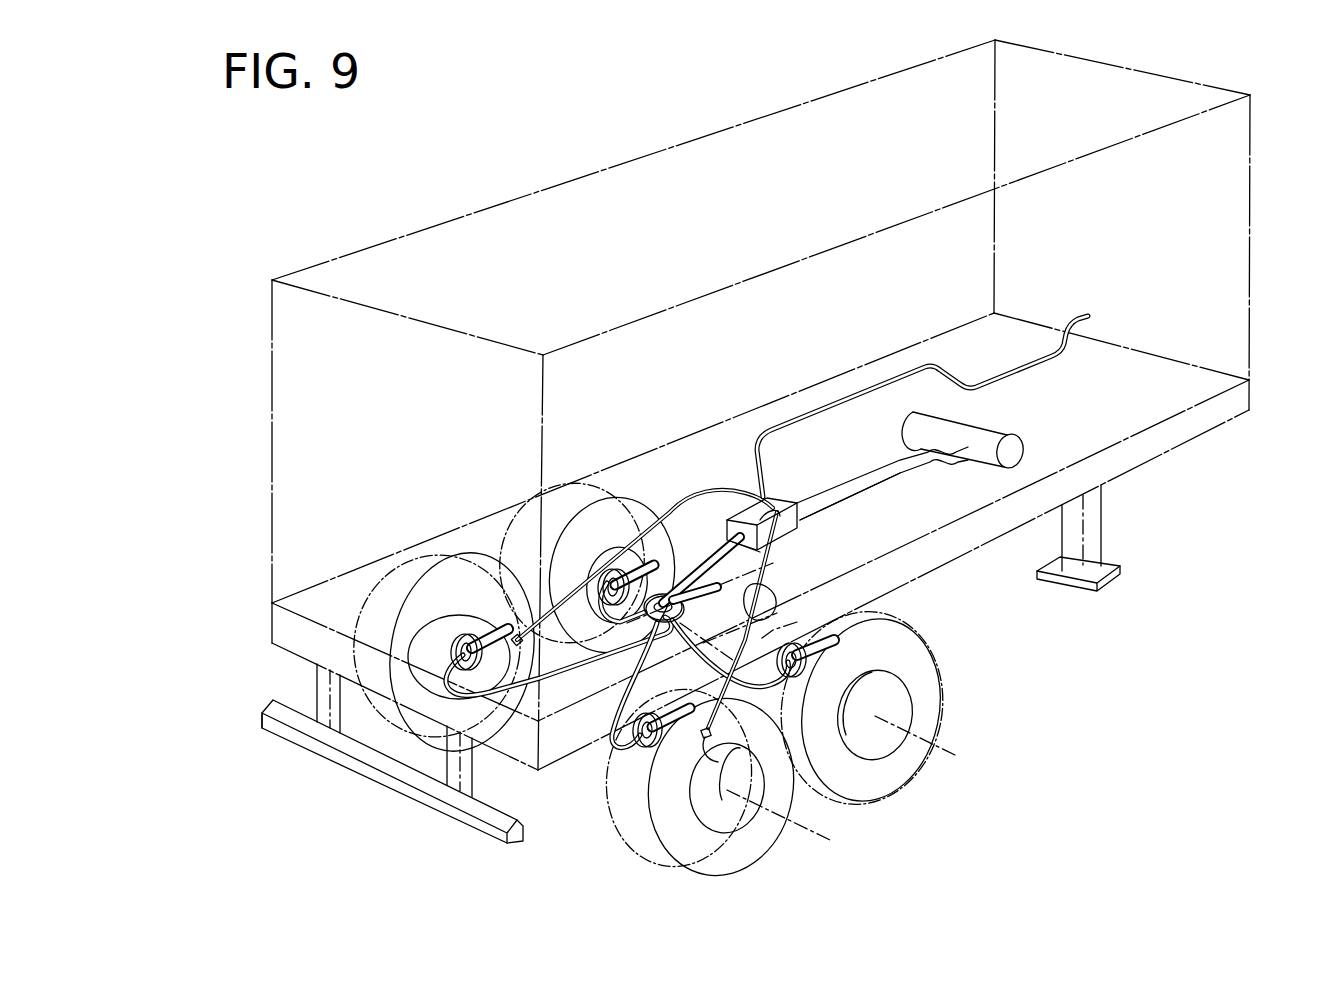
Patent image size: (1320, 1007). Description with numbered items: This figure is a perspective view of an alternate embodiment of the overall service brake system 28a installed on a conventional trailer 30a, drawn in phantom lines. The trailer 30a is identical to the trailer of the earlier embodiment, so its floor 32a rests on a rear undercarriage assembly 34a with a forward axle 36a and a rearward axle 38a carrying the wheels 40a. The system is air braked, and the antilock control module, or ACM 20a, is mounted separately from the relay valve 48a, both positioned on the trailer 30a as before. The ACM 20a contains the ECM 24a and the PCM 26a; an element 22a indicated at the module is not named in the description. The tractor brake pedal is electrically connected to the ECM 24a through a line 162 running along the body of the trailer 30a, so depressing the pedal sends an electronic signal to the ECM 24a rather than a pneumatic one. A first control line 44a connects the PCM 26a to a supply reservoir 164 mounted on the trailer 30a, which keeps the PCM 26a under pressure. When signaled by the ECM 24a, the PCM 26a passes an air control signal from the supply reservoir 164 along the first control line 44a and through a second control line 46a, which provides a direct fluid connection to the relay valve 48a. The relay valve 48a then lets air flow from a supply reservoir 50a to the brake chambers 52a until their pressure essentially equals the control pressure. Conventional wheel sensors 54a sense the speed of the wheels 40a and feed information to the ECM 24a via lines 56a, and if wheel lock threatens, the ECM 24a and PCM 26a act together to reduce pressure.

The antilock control module (ACM) 20a is at (797, 535).
The tensioning assembly 22a is at (791, 498).
The ECM 24a is at (745, 515).
The PCM 26a is at (800, 518).
The overall service brake system 28a is at (608, 578).
The trailer 30a is at (1249, 251).
The deck platform 32a is at (1137, 437).
The wheel hub 34a is at (938, 724).
The axle 36a is at (800, 622).
The frame 38a is at (590, 716).
The wheels 40a is at (403, 572).
The first control line 44a is at (890, 464).
The second control line 46a is at (713, 548).
The relay valve 48a is at (668, 622).
The supply reservoir 50a is at (762, 600).
The brake chambers 52a is at (455, 650).
The wheel sensors 54a is at (520, 634).
The lines 56a is at (683, 500).
The line 162 is at (932, 362).
The supply reservoir 164 is at (973, 433).